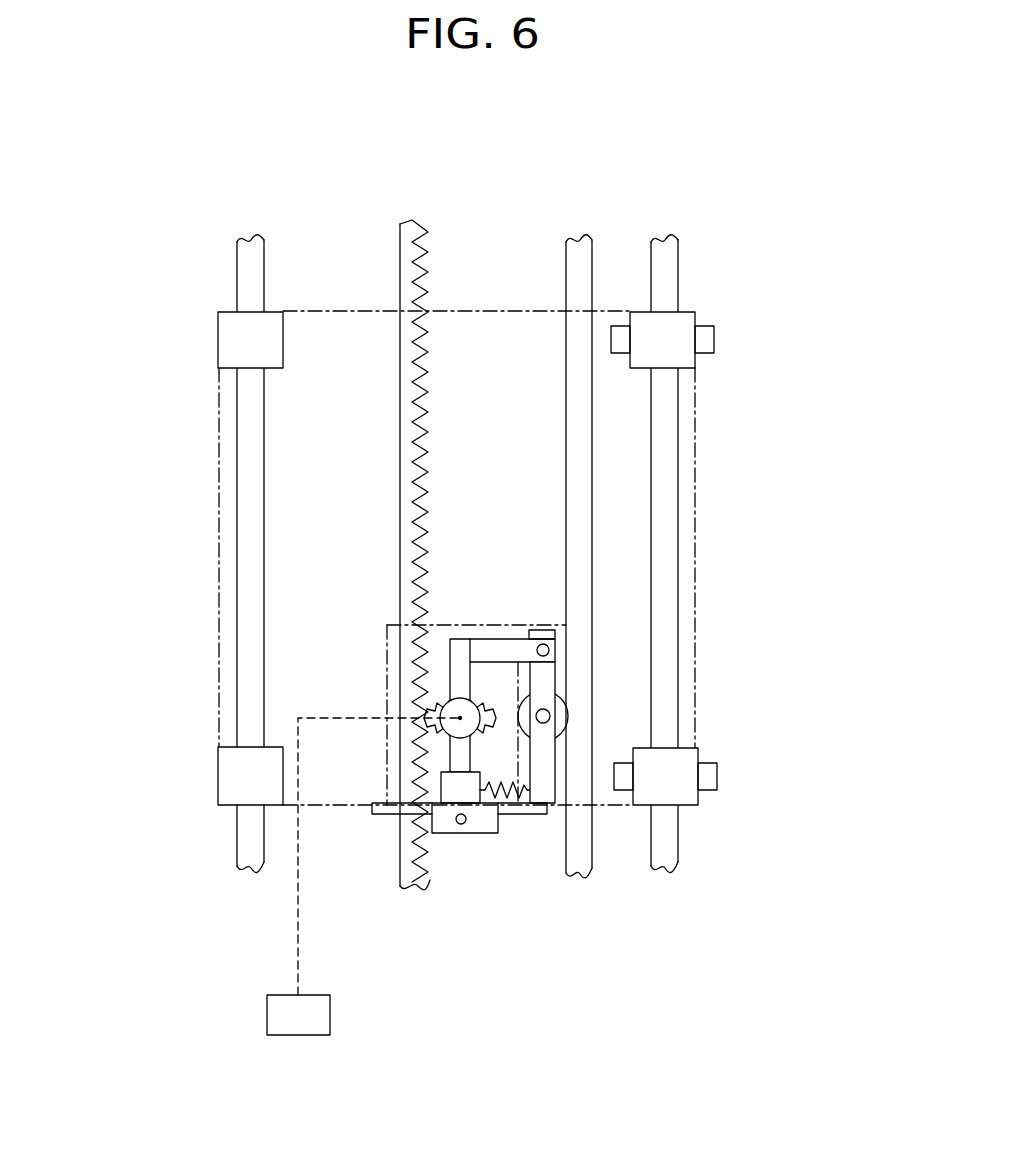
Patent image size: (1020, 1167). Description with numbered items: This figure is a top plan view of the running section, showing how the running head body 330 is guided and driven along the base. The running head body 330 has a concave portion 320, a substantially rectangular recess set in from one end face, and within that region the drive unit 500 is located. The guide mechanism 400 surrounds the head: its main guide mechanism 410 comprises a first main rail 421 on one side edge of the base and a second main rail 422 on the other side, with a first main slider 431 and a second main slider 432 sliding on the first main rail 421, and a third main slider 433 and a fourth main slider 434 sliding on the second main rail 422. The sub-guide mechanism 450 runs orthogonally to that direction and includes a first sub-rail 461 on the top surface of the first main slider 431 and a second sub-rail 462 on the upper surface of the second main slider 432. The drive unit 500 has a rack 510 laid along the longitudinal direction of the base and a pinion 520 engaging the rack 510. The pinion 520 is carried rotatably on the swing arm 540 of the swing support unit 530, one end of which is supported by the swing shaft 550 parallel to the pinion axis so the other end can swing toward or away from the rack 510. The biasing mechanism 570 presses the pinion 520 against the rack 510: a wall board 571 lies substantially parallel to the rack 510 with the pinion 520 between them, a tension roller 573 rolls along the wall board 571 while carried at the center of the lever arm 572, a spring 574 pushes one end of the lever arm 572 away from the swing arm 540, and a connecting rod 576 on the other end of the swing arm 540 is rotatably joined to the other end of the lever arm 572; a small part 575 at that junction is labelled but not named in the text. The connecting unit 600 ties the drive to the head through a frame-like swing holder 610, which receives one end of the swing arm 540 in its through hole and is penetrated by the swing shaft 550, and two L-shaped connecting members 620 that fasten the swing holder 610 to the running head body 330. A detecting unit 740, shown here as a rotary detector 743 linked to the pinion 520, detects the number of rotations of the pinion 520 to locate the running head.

The concave portion 320 is at (388, 650).
The running head body 330 is at (218, 605).
The guide mechanism 400 is at (137, 287).
The main guide mechanism 410 is at (198, 305).
The first main rail 421 is at (678, 838).
The second main rail 422 is at (240, 836).
The first main slider 431 is at (690, 750).
The second main slider 432 is at (683, 360).
The third main slider 433 is at (225, 772).
The fourth main slider 434 is at (225, 340).
The sub-guide mechanism 450 is at (715, 285).
The first sub-rail 461 is at (712, 776).
The second sub-rail 462 is at (712, 338).
The drive unit 500 is at (445, 600).
The rack 510 is at (414, 888).
The pinion 520 is at (432, 716).
The swing support unit 530 is at (506, 660).
The swing arm 540 is at (460, 648).
The swing shaft 550 is at (461, 827).
The biasing mechanism 570 is at (548, 620).
The wall board 571 is at (582, 876).
The lever arm 572 is at (548, 755).
The tension roller 573 is at (552, 712).
The spring 574 is at (440, 792).
The pin 575 is at (545, 650).
The connecting rod 576 is at (510, 638).
The connecting unit 600 is at (365, 818).
The swing holder 610 is at (485, 832).
The connecting members 620 is at (380, 816).
The controller 740 is at (363, 912).
The rotary detector 743 is at (306, 1037).